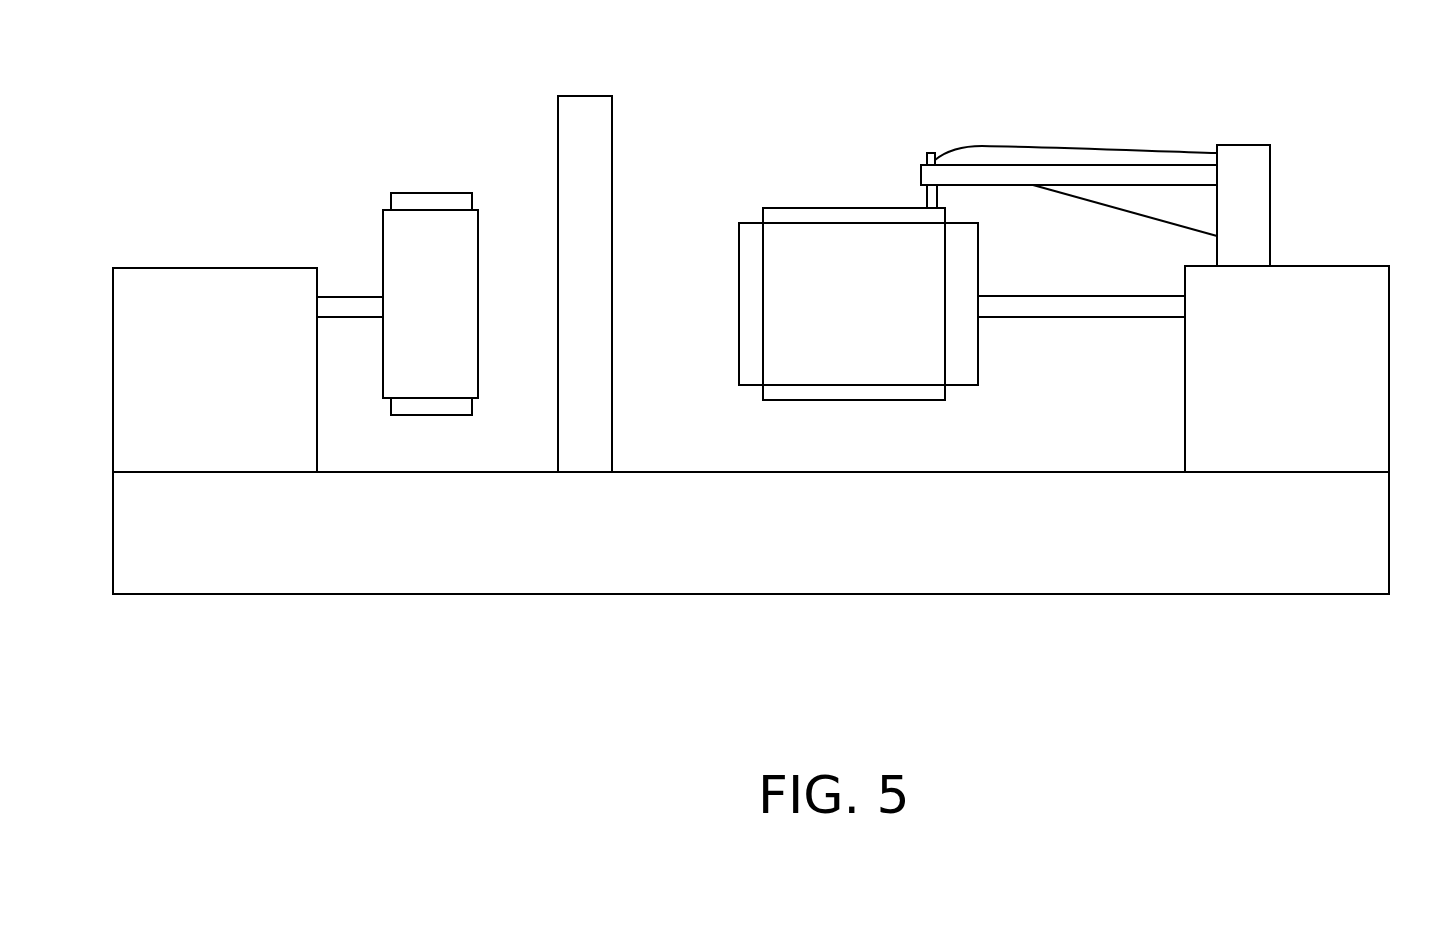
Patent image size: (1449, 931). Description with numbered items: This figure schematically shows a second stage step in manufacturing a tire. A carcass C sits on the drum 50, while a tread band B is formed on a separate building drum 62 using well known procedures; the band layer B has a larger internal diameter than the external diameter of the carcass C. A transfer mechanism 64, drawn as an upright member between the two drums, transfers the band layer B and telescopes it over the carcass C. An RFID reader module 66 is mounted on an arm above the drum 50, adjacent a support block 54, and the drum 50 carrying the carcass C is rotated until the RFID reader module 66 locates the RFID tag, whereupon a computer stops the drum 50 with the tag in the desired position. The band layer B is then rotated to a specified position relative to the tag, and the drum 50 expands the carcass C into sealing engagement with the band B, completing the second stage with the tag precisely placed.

The drum 50 is at (746, 247).
The support block 54 is at (1372, 323).
The building drum 62 is at (408, 225).
The transfer mechanism 64 is at (573, 110).
The RFID reader module 66 is at (925, 194).
The tread band B is at (438, 198).
The carcass C is at (823, 214).